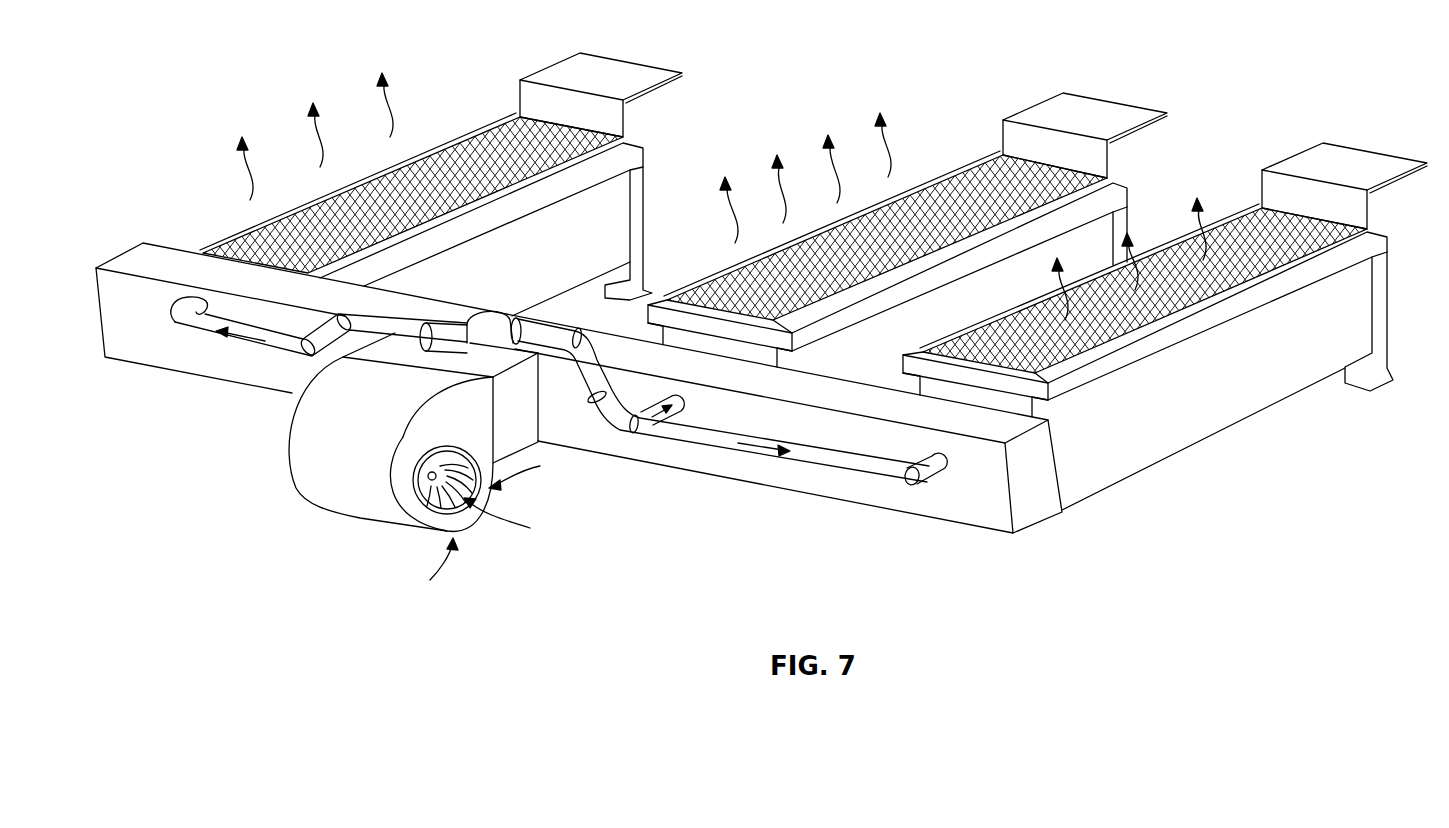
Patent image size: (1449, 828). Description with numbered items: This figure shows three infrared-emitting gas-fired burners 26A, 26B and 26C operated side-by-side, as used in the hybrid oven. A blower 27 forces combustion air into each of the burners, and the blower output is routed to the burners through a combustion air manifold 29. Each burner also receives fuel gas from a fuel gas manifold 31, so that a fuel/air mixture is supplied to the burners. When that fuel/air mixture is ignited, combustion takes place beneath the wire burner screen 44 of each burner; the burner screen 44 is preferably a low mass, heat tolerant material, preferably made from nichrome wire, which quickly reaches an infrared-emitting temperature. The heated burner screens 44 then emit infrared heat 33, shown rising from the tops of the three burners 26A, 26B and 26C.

The gas-fired burner 26A is at (640, 58).
The gas-fired burner 26B is at (1121, 96).
The gas-fired burner 26C is at (1352, 142).
The blower 27 is at (346, 517).
The combustion air manifold 29 is at (840, 503).
The fuel gas manifold 31 is at (730, 442).
The infrared heat 33 is at (318, 148).
The wire burner screen 44 is at (382, 187).